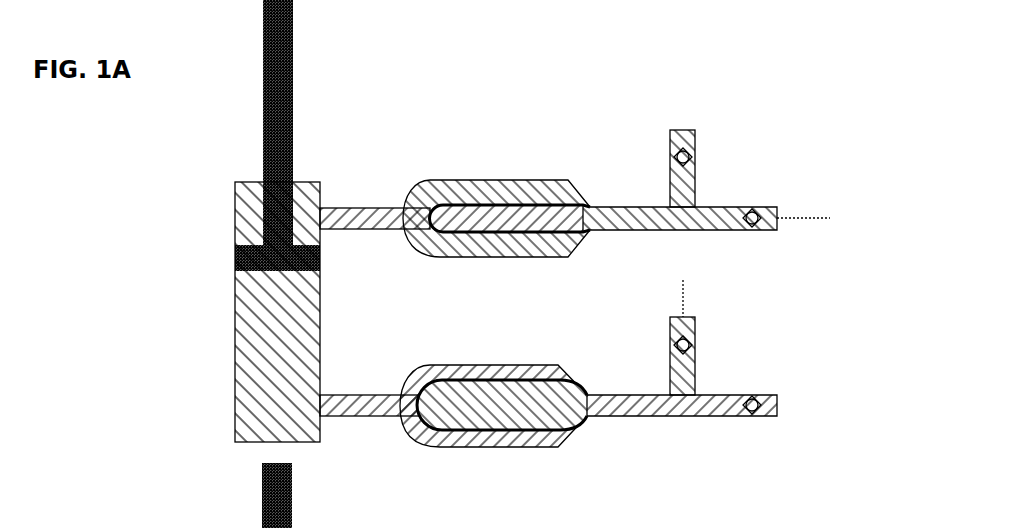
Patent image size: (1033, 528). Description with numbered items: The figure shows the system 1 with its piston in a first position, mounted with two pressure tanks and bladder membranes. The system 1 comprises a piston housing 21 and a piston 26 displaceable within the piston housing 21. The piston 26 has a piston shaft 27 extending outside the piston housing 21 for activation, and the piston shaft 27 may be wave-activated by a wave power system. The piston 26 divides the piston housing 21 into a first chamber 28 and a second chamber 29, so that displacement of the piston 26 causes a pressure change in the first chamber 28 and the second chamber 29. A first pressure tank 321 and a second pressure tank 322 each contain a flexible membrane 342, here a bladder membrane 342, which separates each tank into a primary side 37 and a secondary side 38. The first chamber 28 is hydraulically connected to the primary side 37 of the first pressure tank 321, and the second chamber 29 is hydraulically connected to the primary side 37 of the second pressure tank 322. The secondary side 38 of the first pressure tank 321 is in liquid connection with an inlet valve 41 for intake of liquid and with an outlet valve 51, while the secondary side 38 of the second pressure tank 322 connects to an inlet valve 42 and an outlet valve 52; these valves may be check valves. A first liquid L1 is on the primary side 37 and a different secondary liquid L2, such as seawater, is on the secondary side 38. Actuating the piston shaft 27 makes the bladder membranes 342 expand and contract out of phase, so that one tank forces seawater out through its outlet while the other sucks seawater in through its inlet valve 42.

The system 1 is at (172, 243).
The piston housing 21 is at (240, 332).
The piston 26 is at (318, 272).
The piston shaft 27 is at (285, 50).
The first chamber 28 is at (310, 227).
The second chamber 29 is at (305, 425).
The primary side 37 is at (400, 204).
The secondary side 38 is at (465, 206).
The inlet valve 41 is at (690, 155).
The inlet valve 42 is at (690, 344).
The outlet valve 51 is at (755, 222).
The outlet valve 52 is at (760, 407).
The first pressure tank 321 is at (500, 255).
The second pressure tank 322 is at (500, 445).
The flexible membrane 342 is at (485, 205).
The first liquid L1 is at (285, 368).
The secondary liquid L2 is at (647, 405).